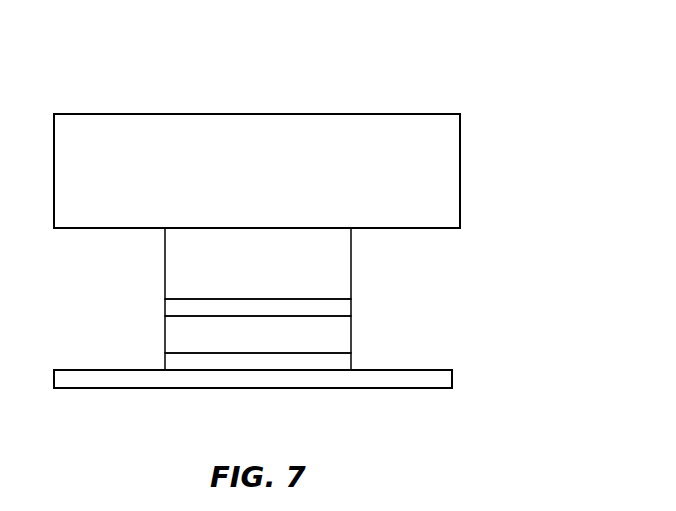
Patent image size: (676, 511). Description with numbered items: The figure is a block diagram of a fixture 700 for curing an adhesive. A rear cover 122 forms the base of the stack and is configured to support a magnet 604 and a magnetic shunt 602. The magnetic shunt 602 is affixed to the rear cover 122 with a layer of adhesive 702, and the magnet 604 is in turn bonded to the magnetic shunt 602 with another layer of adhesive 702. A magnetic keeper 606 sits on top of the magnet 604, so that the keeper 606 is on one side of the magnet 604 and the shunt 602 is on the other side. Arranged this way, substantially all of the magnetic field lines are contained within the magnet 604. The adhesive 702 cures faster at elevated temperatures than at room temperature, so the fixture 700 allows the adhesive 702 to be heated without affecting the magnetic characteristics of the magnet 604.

The device assembly 700 is at (540, 105).
The magnetic keeper 606 is at (257, 171).
The magnet 604 is at (258, 263).
The magnetic shunt 602 is at (258, 334).
The adhesive 702 is at (165, 308).
The rear cover 122 is at (453, 384).